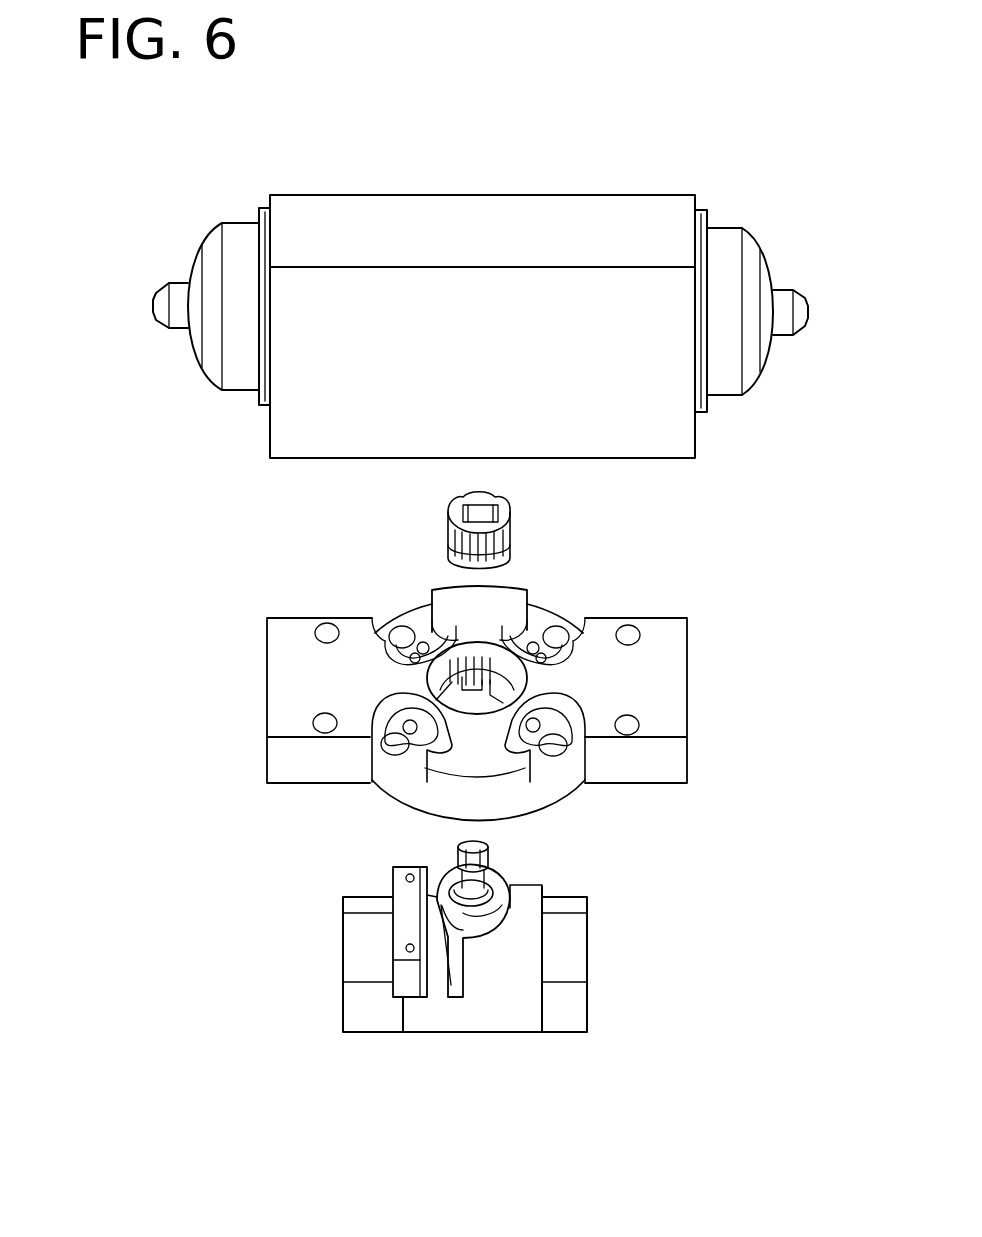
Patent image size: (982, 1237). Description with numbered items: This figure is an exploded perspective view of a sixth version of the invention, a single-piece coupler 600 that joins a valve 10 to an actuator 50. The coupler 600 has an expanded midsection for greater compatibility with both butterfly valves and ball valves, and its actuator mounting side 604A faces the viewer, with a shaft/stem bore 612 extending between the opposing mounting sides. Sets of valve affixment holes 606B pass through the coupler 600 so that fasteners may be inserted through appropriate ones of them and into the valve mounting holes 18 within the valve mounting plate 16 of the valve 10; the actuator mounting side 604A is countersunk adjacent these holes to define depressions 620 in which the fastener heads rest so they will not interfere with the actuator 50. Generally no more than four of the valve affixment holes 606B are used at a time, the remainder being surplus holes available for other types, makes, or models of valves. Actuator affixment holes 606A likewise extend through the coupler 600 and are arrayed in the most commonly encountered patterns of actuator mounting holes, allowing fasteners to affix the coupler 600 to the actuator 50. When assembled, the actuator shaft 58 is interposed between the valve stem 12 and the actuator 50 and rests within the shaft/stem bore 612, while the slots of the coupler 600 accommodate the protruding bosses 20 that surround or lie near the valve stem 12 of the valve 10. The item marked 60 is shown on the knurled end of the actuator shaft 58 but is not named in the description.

The actuator 50 is at (297, 195).
The actuator shaft 58 is at (510, 523).
The socket opening of nut 60 is at (450, 530).
The coupler 600 is at (267, 682).
The actuator mounting side 604A is at (676, 652).
The actuator affixment holes 606A is at (630, 727).
The valve affixment holes 606B is at (560, 765).
The shaft/stem bore 612 is at (478, 642).
The depressions 620 is at (413, 765).
The valve 10 is at (343, 963).
The valve stem 12 is at (493, 853).
The valve mounting plate 16 is at (390, 878).
The valve mounting holes 18 is at (405, 947).
The bosses 20 is at (540, 876).